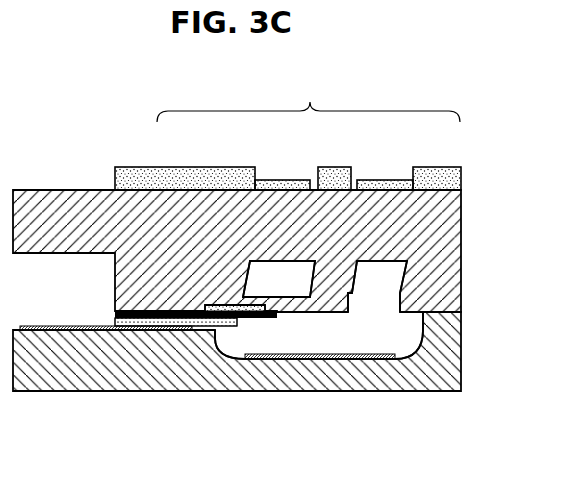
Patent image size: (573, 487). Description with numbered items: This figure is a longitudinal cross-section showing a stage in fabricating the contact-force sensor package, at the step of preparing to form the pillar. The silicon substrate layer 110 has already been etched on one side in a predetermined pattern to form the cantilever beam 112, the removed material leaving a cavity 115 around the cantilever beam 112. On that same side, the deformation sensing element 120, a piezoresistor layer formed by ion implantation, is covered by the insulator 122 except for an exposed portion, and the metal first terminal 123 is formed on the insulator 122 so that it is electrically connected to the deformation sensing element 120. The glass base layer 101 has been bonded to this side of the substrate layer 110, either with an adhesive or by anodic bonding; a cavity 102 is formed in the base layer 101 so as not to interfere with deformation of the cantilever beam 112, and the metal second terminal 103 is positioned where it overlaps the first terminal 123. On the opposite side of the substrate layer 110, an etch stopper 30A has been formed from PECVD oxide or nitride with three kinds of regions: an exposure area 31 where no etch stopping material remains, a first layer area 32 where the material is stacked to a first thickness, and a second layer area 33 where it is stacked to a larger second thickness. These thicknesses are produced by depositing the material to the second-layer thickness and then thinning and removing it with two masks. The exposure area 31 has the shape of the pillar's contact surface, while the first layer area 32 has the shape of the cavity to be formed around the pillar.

The etch stopper 30A is at (308, 101).
The exposure area 31 is at (315, 186).
The first layer area 32 is at (283, 179).
The second layer area 33 is at (180, 166).
The base layer 101 is at (461, 361).
The cavity 102 is at (308, 337).
The second terminal 103 is at (58, 330).
The substrate layer 110 is at (462, 233).
The cantilever beam 112 is at (337, 312).
The cavity 115 is at (375, 282).
The deformation sensing element 120 is at (217, 312).
The insulator 122 is at (260, 312).
The first terminal 123 is at (167, 324).